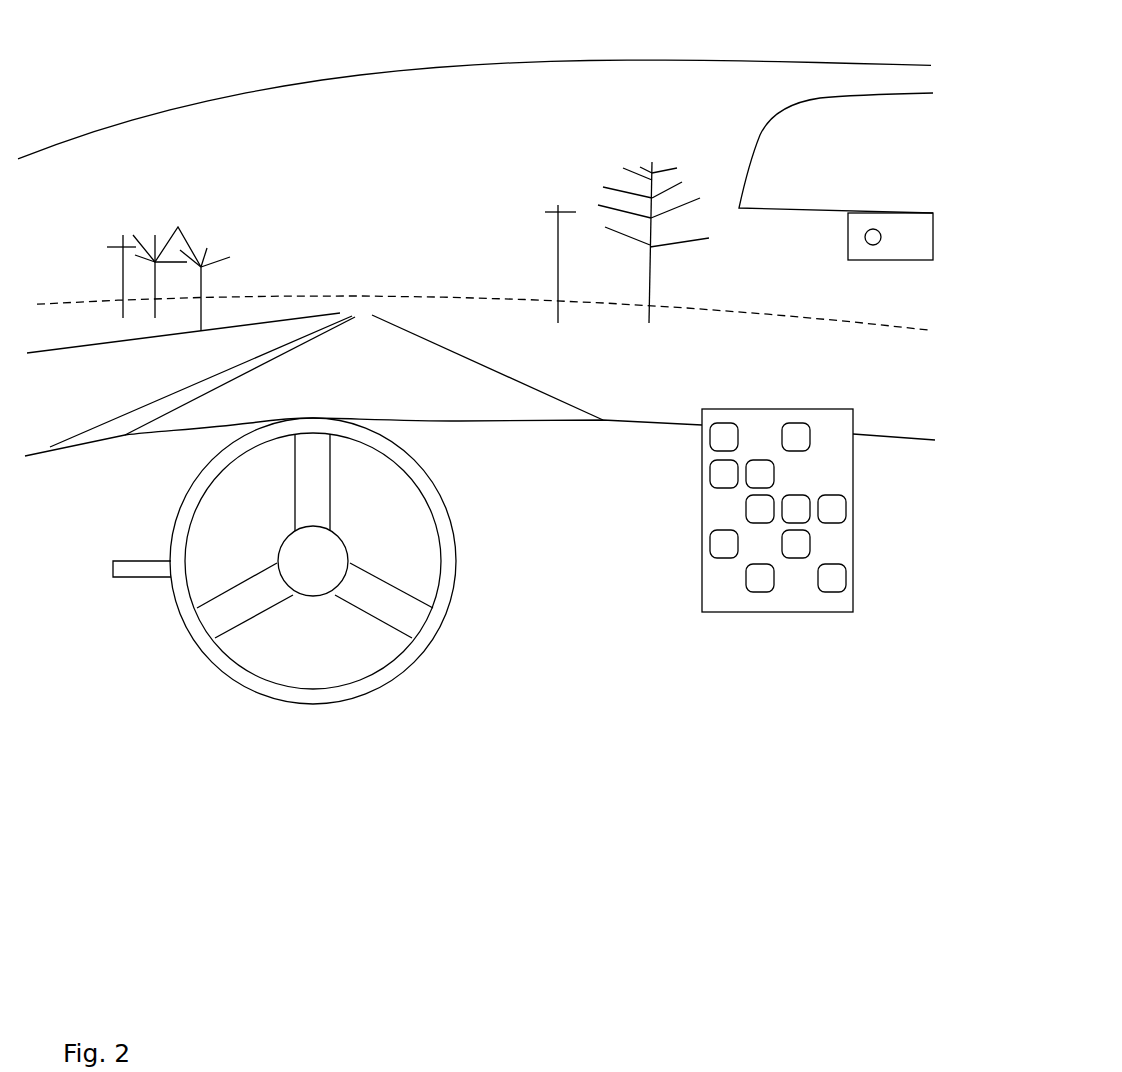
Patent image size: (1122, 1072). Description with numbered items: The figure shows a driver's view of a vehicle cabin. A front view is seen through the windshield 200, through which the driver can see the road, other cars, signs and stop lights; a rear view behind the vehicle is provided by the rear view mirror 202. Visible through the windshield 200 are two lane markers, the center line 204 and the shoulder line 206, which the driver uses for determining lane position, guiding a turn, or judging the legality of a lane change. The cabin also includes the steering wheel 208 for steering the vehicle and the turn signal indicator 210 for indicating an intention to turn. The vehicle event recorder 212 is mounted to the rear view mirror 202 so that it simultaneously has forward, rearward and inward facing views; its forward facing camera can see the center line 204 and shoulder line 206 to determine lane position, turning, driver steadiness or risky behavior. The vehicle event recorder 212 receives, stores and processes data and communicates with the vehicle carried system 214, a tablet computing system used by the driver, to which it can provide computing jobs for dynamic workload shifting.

The windshield 200 is at (416, 82).
The rear view mirror 202 is at (765, 126).
The center line 204 is at (283, 353).
The shoulder line 206 is at (537, 390).
The steering wheel 208 is at (455, 537).
The turn signal indicator 210 is at (119, 579).
The vehicle event recorder 212 is at (848, 248).
The vehicle carried system 214 is at (796, 613).